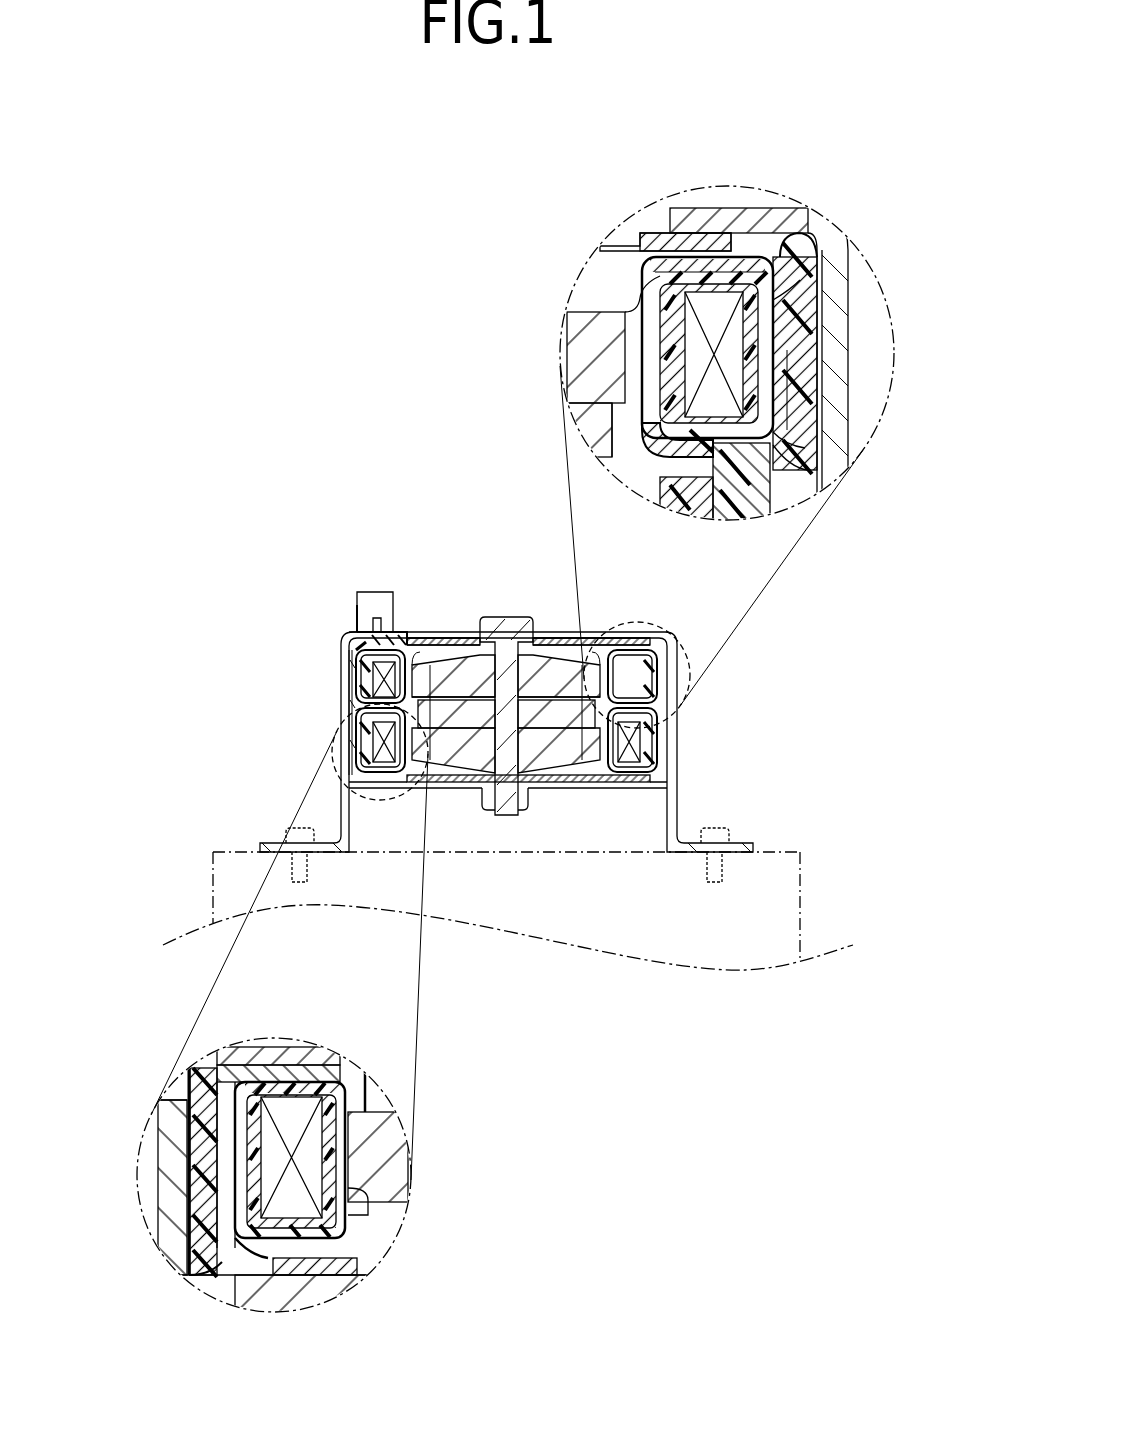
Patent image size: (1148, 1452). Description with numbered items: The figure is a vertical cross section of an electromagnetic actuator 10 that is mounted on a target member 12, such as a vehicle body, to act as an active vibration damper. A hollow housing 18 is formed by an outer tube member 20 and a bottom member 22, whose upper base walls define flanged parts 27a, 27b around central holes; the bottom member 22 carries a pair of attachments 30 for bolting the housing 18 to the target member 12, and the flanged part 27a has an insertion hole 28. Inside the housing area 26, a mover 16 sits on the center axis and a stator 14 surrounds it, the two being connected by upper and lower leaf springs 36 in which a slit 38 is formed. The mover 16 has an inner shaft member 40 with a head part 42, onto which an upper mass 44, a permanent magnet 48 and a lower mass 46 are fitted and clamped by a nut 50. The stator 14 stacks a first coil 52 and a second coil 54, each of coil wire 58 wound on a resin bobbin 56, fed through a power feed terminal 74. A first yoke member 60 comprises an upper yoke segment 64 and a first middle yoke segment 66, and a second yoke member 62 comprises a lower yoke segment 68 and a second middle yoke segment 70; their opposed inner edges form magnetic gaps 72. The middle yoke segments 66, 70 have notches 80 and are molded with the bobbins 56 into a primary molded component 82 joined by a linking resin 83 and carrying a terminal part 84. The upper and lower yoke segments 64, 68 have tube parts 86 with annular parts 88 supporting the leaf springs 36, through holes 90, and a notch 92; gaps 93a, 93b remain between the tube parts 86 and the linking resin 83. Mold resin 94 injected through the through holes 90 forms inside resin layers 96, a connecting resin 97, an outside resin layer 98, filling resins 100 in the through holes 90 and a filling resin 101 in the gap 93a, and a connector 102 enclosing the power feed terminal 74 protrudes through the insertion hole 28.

The electromagnetic actuator 10 is at (320, 538).
The target member 12 is at (805, 884).
The stator 14 is at (488, 757).
The mover 16 is at (474, 632).
The housing 18 is at (752, 772).
The outer tube member 20 is at (680, 781).
The bottom member 22 is at (682, 810).
The housing area 26 is at (556, 636).
The flanged part 27a is at (618, 638).
The flanged part 27b is at (630, 785).
The insertion hole 28 is at (355, 636).
The attachment 30 is at (278, 838).
The leaf spring 36 is at (658, 212).
The slit 38 is at (628, 242).
The inner shaft member 40 is at (488, 765).
The head part 42 is at (509, 616).
The upper mass 44 is at (572, 662).
The lower mass 46 is at (542, 772).
The permanent magnet 48 is at (458, 720).
The nut 50 is at (516, 814).
The first coil 52 is at (366, 684).
The second coil 54 is at (645, 745).
The resin bobbin 56 is at (745, 300).
The coil wire 58 is at (722, 338).
The first yoke member 60 is at (405, 645).
The second yoke member 62 is at (395, 790).
The upper yoke segment 64 is at (800, 428).
The first middle yoke segment 66 is at (790, 405).
The lower yoke segment 68 is at (362, 770).
The second middle yoke segment 70 is at (645, 465).
The magnetic gap 72 is at (645, 300).
The power feed terminal 74 is at (376, 615).
The notch 80 is at (735, 480).
The primary molded component 82 is at (640, 487).
The linking resin 83 is at (700, 445).
The terminal part 84 is at (368, 644).
The tube part 86 is at (770, 290).
The annular part 88 is at (700, 258).
The through hole 90 is at (790, 345).
The notch 92 is at (360, 660).
The gap 93a is at (775, 428).
The gap 93b is at (780, 448).
The mold resin 94 is at (805, 225).
The inside resin layer 96 is at (757, 262).
The connecting resin 97 is at (755, 490).
The outside resin layer 98 is at (796, 270).
The filling resin 100 is at (790, 372).
The filling resin 101 is at (775, 482).
The connector 102 is at (356, 610).